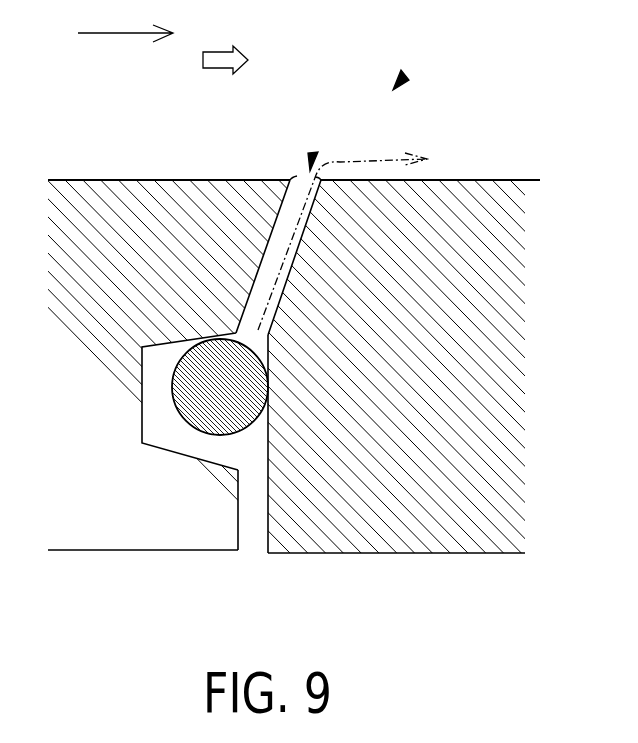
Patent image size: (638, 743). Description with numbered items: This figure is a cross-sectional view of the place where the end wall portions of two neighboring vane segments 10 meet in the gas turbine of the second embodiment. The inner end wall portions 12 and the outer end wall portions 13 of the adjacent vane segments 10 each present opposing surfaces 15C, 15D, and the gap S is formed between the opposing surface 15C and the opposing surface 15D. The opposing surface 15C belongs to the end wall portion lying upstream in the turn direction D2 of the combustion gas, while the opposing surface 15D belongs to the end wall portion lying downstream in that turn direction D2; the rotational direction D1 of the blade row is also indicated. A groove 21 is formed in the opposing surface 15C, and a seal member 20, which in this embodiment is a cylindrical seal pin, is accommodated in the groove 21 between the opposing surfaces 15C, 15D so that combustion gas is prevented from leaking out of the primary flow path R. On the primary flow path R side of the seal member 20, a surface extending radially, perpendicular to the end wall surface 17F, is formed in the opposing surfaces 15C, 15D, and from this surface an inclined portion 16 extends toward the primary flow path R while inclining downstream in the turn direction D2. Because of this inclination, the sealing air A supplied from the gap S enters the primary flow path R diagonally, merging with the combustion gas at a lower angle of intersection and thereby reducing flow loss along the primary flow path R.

The vane segment 10 is at (113, 124).
The inner end wall portion 12 is at (195, 180).
The outer end wall portion 13 is at (473, 180).
The opposing surface 15C is at (238, 533).
The opposing surface 15D is at (268, 497).
The inclined portion 16 is at (290, 180).
The end wall surface 17F is at (80, 180).
The seal member 20 is at (188, 432).
The groove 21 is at (142, 427).
The rotational direction D1 is at (125, 21).
The turn direction D2 is at (222, 51).
The gap S is at (313, 150).
The primary flow path R is at (404, 74).
The sealing air A is at (383, 158).